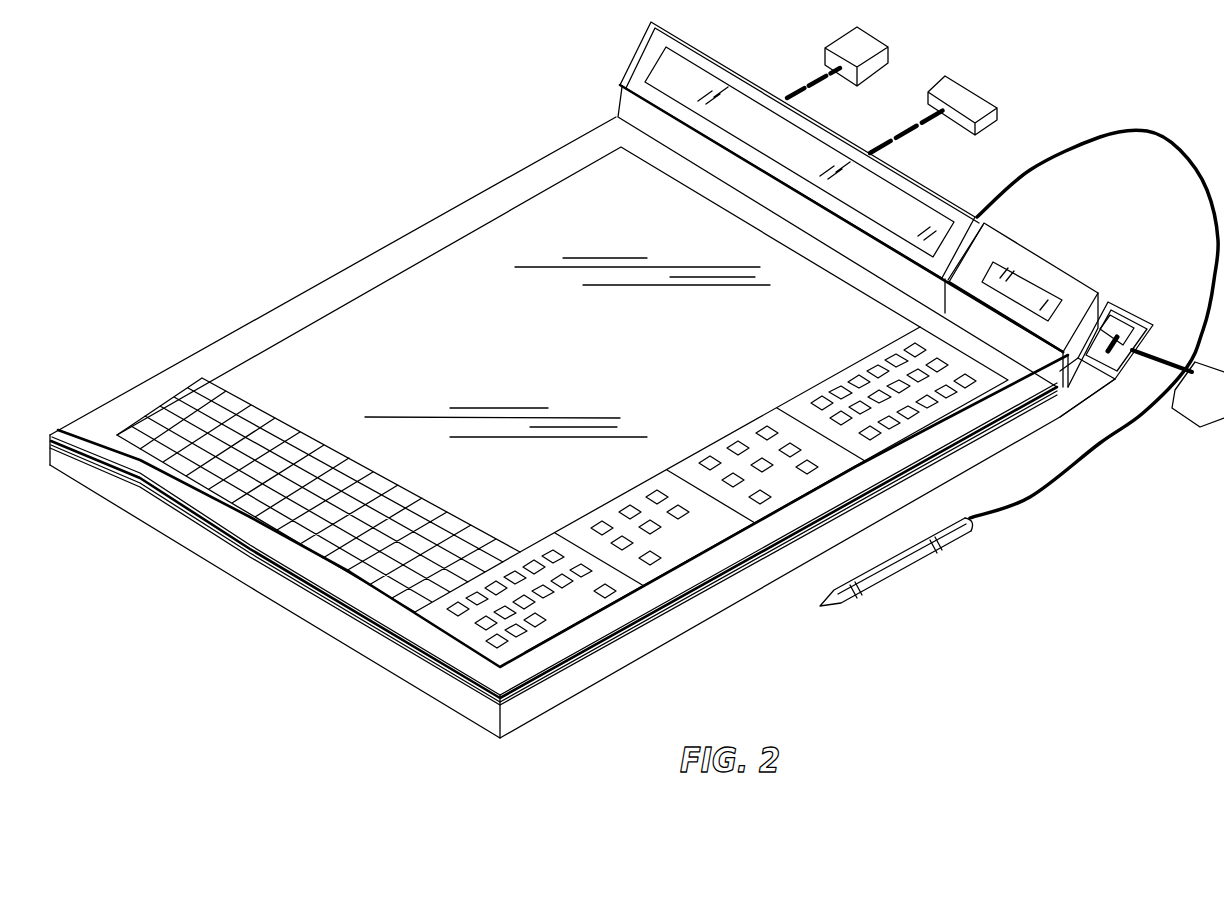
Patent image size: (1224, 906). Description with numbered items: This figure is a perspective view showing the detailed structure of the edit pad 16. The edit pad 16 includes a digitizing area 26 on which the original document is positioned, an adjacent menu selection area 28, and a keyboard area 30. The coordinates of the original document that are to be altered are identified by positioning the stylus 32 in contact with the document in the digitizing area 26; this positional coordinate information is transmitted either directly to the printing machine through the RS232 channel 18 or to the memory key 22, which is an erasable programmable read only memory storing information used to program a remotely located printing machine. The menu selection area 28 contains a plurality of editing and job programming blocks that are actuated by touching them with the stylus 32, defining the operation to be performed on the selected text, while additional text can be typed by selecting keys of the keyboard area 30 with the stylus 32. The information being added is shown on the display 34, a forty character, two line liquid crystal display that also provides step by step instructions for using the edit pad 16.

The edit pad 16 is at (519, 137).
The RS232 channel 18 is at (968, 96).
The memory key 22 is at (1195, 397).
The digitizing area 26 is at (334, 295).
The menu selection area 28 is at (715, 561).
The keyboard area 30 is at (283, 538).
The stylus 32 is at (903, 583).
The display 34 is at (900, 212).